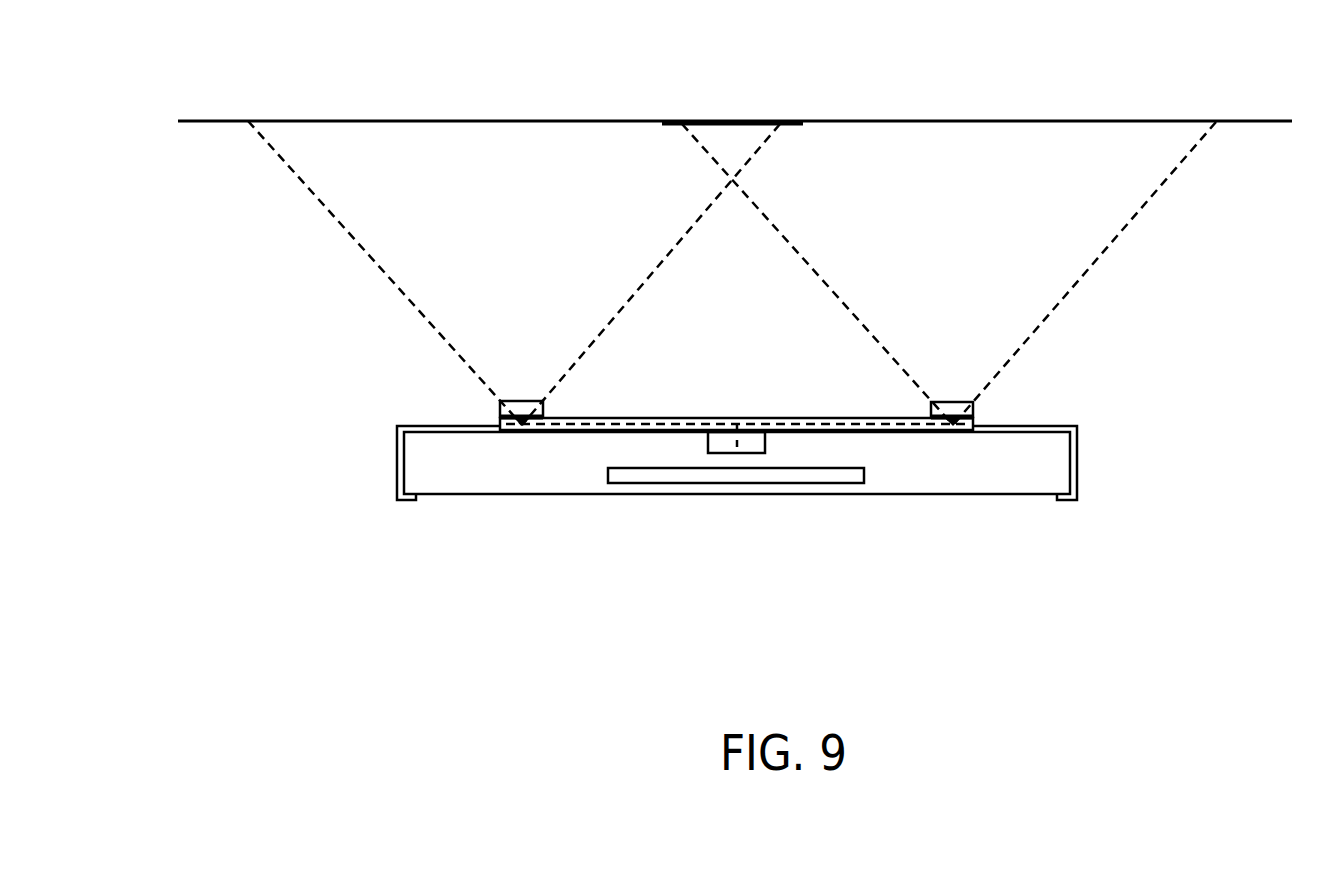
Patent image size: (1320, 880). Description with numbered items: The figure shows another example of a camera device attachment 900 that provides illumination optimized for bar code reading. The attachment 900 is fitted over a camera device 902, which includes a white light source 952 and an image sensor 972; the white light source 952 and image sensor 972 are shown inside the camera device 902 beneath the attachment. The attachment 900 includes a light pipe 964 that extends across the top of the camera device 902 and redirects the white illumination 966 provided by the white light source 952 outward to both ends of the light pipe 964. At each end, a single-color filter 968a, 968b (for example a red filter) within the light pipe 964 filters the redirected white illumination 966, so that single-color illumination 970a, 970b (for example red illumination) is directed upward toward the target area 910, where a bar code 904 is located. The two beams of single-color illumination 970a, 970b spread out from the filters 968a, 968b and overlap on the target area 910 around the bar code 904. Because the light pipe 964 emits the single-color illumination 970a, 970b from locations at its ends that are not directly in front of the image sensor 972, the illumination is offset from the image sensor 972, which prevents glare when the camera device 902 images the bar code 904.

The target area 910 is at (533, 121).
The bar code 904 is at (802, 125).
The single-color illumination 970a is at (360, 245).
The single-color illumination 970b is at (1085, 272).
The single-color filter 968a is at (499, 418).
The single-color filter 968b is at (973, 415).
The light pipe 964 is at (693, 418).
The white illumination 966 is at (587, 425).
The camera device attachment 900 is at (1077, 455).
The camera device 902 is at (1017, 495).
The white light source 952 is at (744, 453).
The image sensor 972 is at (840, 483).